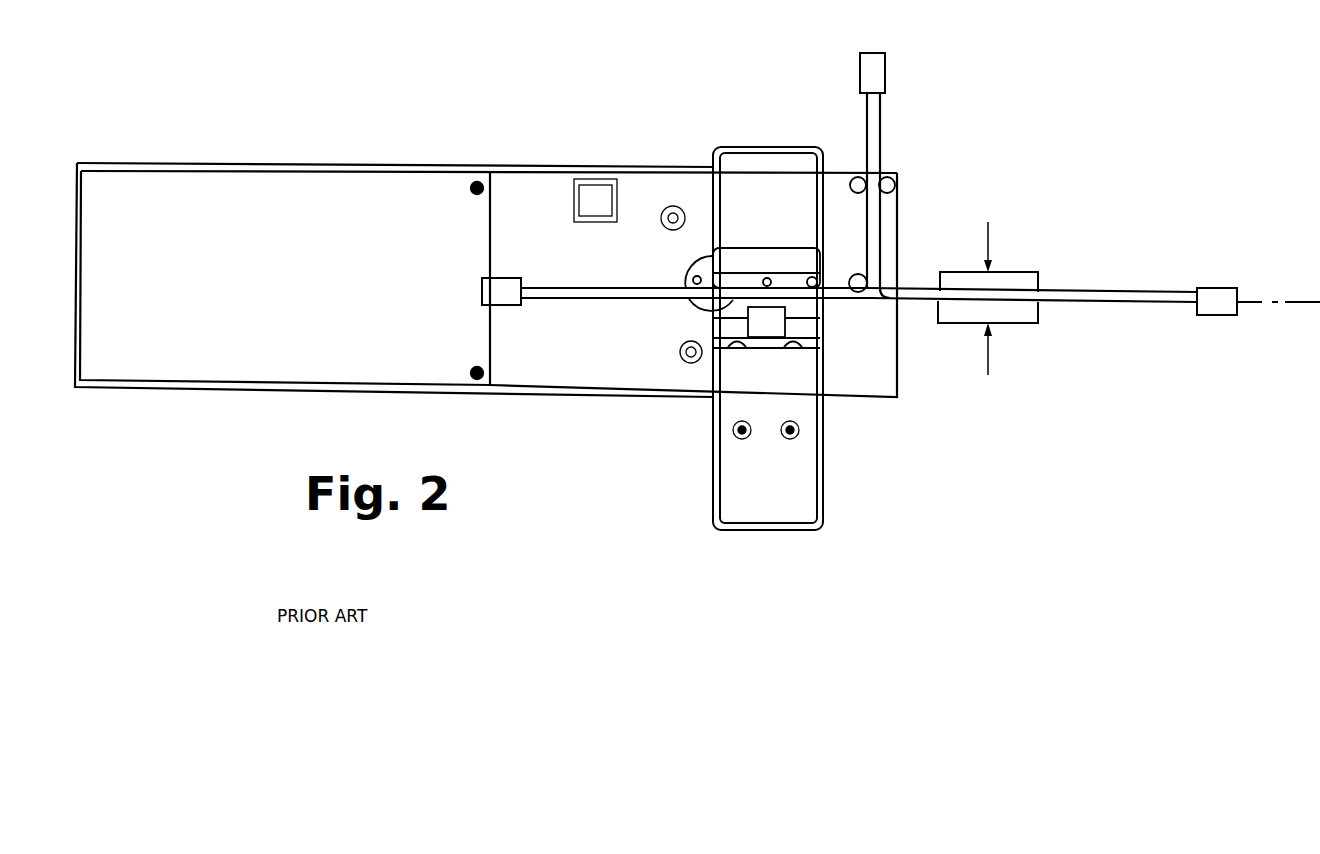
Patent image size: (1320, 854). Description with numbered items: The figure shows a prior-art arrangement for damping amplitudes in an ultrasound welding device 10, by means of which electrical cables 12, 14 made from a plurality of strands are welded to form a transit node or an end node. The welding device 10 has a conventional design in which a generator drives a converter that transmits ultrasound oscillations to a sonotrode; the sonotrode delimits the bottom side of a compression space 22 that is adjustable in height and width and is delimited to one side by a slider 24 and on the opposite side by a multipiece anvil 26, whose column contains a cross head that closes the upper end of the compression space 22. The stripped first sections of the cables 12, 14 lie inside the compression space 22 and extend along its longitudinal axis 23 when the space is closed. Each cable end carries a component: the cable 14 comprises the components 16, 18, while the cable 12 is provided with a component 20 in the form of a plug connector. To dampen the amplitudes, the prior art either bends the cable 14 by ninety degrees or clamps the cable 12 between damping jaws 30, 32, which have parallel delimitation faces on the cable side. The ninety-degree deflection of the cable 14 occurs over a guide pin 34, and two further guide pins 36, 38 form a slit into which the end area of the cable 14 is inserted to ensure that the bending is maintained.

The ultrasound welding device 10 is at (282, 64).
The cable 12 is at (1150, 300).
The cable 14 is at (873, 130).
The component 16 is at (873, 73).
The component 18 is at (509, 286).
The component 20 is at (1212, 292).
The compression space 22 is at (712, 305).
The longitudinal axis 23 is at (1300, 300).
The slider 24 is at (800, 329).
The anvil 26 is at (734, 137).
The damping jaw 30 is at (1020, 314).
The damping jaw 32 is at (1023, 282).
The guide pin 34 is at (867, 284).
The guide pin 36 is at (855, 177).
The guide pin 38 is at (895, 185).